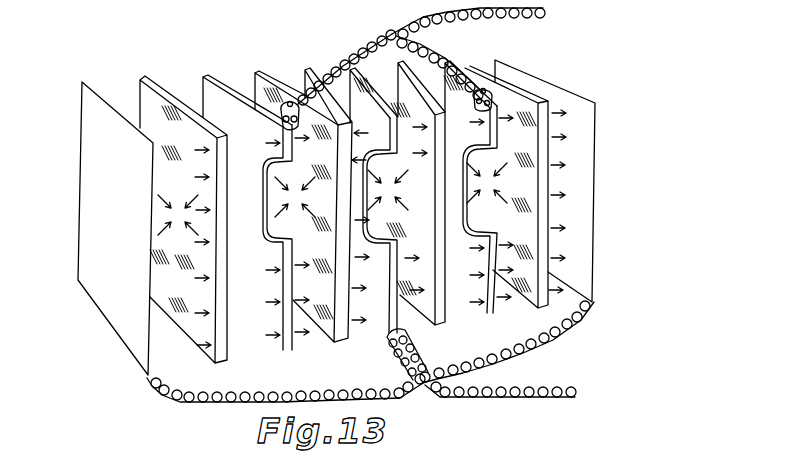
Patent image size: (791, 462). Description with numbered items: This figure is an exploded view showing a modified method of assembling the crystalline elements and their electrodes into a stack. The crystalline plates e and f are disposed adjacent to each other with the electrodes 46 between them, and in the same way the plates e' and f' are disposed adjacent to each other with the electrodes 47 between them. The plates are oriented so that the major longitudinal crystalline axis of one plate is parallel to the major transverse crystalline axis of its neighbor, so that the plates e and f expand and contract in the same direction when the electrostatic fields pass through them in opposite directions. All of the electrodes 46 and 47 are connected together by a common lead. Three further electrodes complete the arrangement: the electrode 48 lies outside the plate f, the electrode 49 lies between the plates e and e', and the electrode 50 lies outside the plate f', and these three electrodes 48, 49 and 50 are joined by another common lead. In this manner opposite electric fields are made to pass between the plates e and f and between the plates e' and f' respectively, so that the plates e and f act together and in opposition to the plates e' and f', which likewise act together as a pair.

The electrode 48 is at (97, 308).
The electrodes 46 is at (283, 350).
The electrode 49 is at (386, 334).
The electrodes 47 is at (488, 313).
The electrode 50 is at (598, 252).
The plate f is at (183, 202).
The plate e is at (312, 191).
The plate e' is at (399, 187).
The plate f' is at (515, 168).